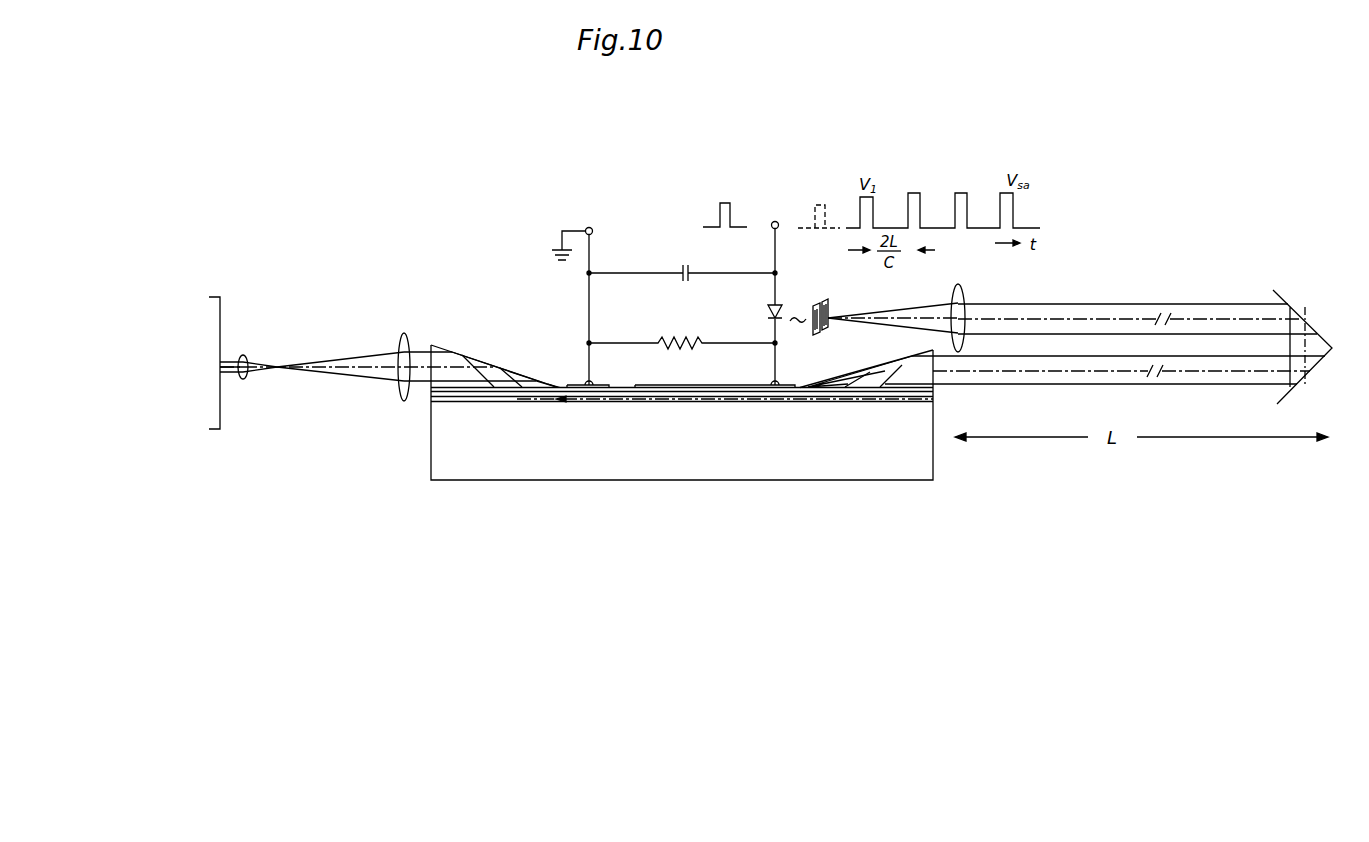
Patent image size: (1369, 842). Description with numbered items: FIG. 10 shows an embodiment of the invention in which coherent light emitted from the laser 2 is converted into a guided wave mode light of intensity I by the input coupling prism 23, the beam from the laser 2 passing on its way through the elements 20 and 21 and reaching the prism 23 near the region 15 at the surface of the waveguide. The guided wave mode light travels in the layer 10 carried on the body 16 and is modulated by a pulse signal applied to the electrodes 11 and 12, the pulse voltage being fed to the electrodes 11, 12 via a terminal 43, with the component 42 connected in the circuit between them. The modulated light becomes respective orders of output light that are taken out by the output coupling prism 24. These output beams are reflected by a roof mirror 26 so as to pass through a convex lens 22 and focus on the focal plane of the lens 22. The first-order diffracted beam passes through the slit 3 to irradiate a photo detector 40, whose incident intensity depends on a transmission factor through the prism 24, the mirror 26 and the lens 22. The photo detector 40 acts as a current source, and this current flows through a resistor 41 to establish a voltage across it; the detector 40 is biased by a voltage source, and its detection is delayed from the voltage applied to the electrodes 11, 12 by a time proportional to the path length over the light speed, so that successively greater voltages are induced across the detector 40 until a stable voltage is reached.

The laser 2 is at (216, 311).
The lens 20 is at (243, 355).
The lens 21 is at (402, 343).
The input coupling prism 23 is at (452, 350).
The coupling point 15 is at (557, 387).
The electrode 11 is at (575, 384).
The electrode 12 is at (733, 385).
The optical waveguide film 10 is at (661, 402).
The substrate 16 is at (559, 462).
The capacitor 42 is at (683, 268).
The terminal 43 is at (741, 205).
The photo detector 40 is at (768, 314).
The resistor 41 is at (681, 341).
The slit 3 is at (815, 310).
The convex lens 22 is at (962, 298).
The output coupling prism 24 is at (890, 367).
The roof mirror 26 is at (1300, 300).